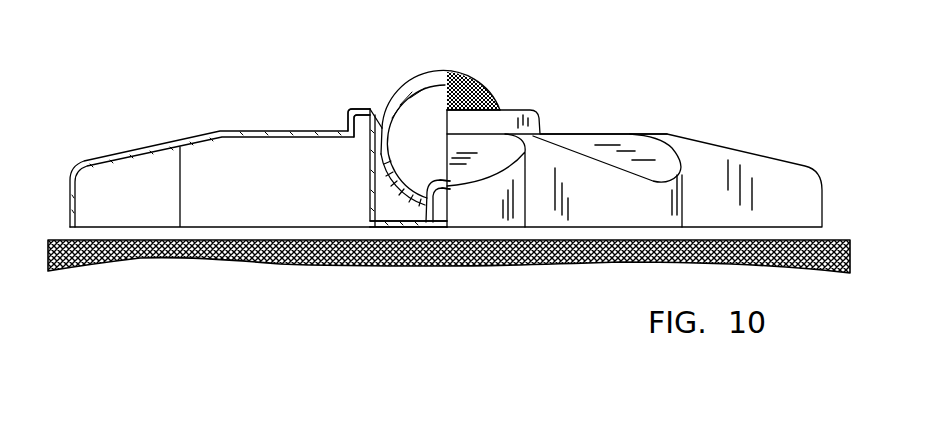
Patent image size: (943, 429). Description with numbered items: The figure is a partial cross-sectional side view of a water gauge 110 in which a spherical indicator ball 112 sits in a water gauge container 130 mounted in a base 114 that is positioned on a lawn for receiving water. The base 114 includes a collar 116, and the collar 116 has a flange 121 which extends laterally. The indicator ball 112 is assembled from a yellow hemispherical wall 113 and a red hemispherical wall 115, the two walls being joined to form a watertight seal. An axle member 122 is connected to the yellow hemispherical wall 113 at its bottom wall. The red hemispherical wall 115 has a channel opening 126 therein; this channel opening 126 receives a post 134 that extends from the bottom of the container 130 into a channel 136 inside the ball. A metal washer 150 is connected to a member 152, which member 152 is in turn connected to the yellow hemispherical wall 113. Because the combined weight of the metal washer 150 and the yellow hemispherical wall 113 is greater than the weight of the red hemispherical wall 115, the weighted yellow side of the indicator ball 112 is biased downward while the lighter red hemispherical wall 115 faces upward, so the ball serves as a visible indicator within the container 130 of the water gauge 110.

The water gauge 110 is at (645, 64).
The indicator ball 112 is at (468, 85).
The yellow hemispherical wall 113 is at (487, 92).
The base 114 is at (722, 147).
The red hemispherical wall 115 is at (418, 243).
The collar 116 is at (352, 120).
The flange 121 is at (357, 111).
The axle member 122 is at (380, 112).
The channel opening 126 is at (432, 200).
The container 130 is at (370, 190).
The post 134 is at (452, 186).
The channel 136 is at (427, 165).
The metal washer 150 is at (427, 90).
The member 152 is at (415, 97).